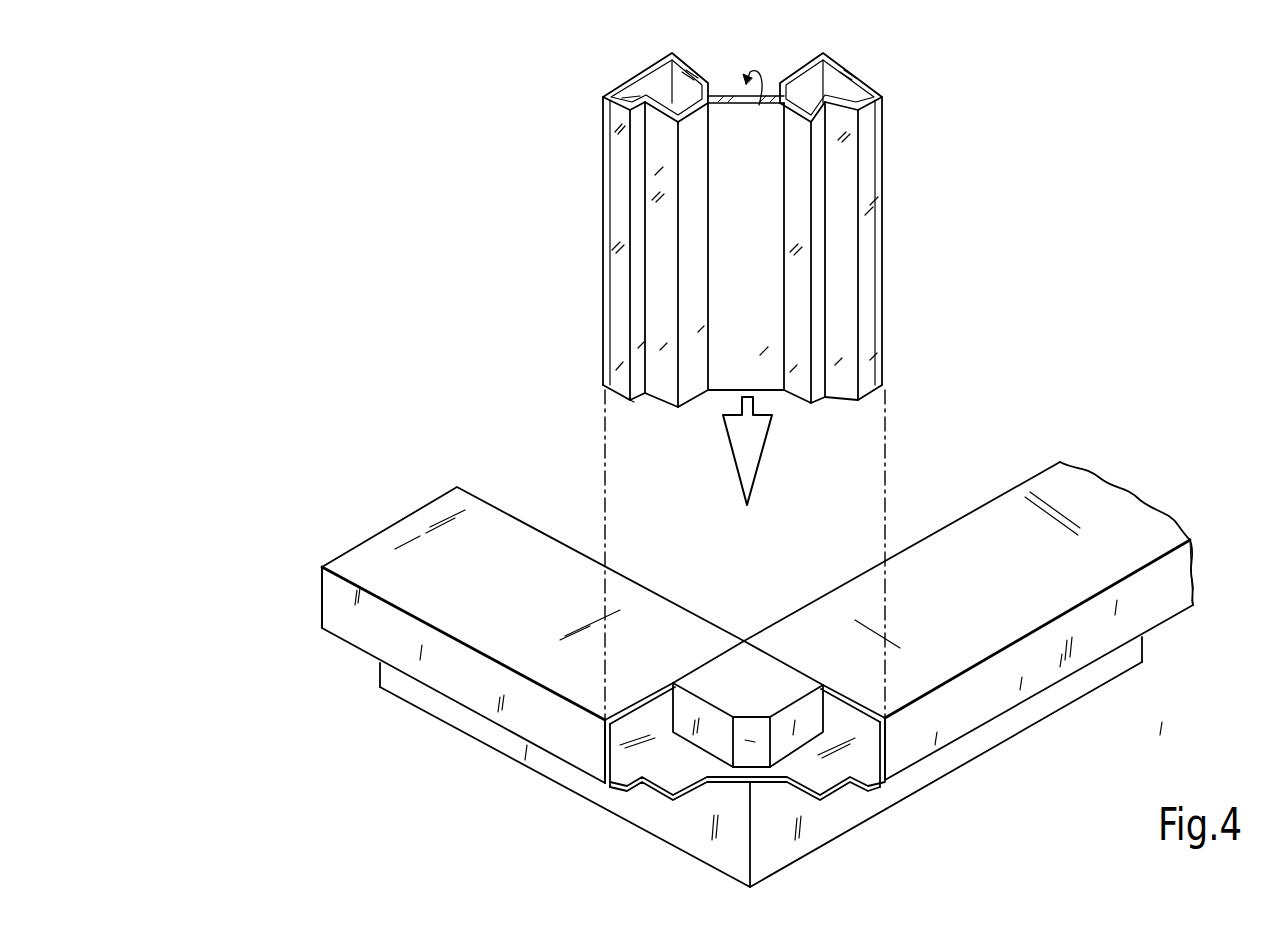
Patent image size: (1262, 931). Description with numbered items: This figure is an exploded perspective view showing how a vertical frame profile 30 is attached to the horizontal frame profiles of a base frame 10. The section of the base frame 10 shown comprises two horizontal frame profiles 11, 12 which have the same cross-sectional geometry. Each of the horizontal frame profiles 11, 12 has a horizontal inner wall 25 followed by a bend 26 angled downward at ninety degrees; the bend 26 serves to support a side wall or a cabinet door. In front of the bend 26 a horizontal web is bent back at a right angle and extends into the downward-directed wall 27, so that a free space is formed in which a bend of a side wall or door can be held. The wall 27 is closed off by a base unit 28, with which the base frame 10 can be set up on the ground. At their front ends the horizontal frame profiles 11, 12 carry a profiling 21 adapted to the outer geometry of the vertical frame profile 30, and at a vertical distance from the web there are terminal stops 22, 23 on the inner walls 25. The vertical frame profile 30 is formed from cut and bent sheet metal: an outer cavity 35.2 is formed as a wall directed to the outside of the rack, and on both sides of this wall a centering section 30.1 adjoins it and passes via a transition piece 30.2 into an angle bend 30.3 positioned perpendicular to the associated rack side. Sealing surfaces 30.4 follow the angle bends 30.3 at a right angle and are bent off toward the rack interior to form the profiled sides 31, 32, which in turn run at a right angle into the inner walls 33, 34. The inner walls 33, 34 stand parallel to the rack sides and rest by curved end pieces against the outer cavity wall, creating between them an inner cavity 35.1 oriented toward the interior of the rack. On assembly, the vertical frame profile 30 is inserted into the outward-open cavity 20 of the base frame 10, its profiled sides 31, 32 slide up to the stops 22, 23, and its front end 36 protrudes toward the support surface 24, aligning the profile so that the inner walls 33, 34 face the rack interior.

The base frame 10 is at (732, 630).
The horizontal frame profile 11 is at (372, 527).
The horizontal frame profile 12 is at (1135, 505).
The cavity 20 is at (716, 768).
The profiling 21 is at (692, 790).
The terminal stop 22 is at (645, 697).
The terminal stop 23 is at (850, 697).
The support surface 24 is at (648, 757).
The horizontal inner wall 25 is at (481, 512).
The bend 26 is at (330, 607).
The wall 27 is at (338, 640).
The base unit 28 is at (514, 763).
The vertical frame profile 30 is at (752, 274).
The centering section 30.1 is at (797, 163).
The transition piece 30.2 is at (817, 218).
The angle bend 30.3 is at (848, 253).
The sealing surface 30.4 is at (870, 318).
The profiled side 31 is at (866, 84).
The profiled side 32 is at (603, 97).
The inner wall 33 is at (672, 53).
The inner wall 34 is at (815, 56).
The inner cavity 35.1 is at (722, 127).
The outer cavity 35.2 is at (727, 380).
The front end 36 is at (658, 400).